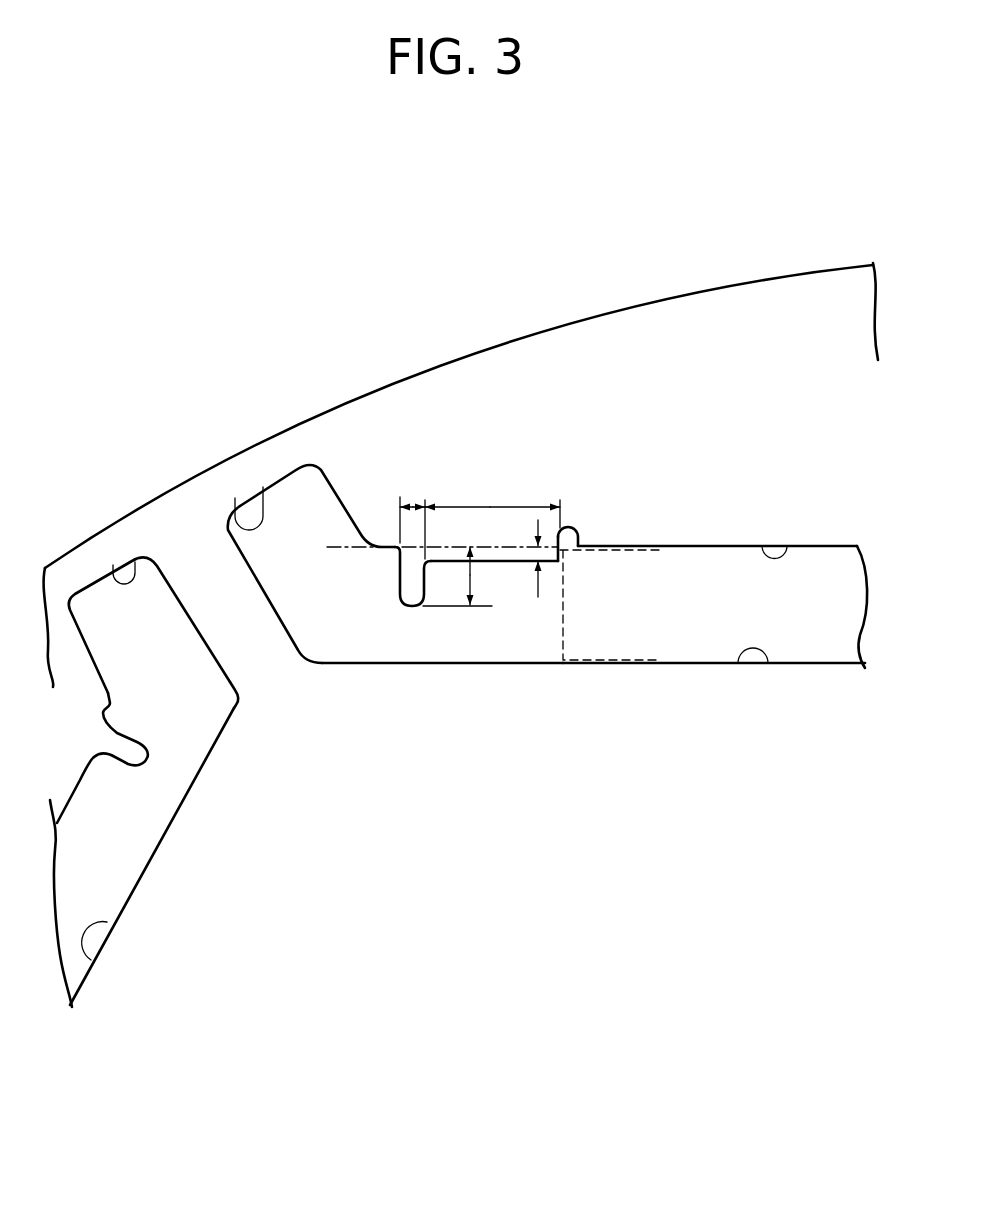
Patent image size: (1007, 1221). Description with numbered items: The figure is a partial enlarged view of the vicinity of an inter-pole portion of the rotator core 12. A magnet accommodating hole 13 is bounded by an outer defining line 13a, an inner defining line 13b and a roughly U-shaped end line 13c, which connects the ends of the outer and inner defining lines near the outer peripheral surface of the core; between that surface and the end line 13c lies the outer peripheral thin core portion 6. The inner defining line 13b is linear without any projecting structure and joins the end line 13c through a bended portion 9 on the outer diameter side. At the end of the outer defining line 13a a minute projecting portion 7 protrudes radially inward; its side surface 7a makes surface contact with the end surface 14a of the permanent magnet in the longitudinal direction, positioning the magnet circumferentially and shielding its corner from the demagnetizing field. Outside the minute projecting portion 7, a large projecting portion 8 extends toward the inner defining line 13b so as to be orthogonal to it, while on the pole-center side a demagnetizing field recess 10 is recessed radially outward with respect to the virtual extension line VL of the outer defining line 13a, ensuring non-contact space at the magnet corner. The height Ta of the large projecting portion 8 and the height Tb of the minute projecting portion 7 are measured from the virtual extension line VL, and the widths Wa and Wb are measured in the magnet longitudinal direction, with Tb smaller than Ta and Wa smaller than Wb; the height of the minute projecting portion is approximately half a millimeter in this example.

The rotator core 12 is at (148, 216).
The outer peripheral thin core portion 6 is at (273, 463).
The minute projecting portion 7 is at (510, 562).
The side surface of the minute projecting portion 7a is at (593, 550).
The large projecting portion 8 is at (412, 607).
The bended portion 9 is at (311, 657).
The demagnetizing field recess 10 is at (572, 528).
The magnet accommodating hole 13 is at (693, 567).
The outer defining line 13a is at (787, 545).
The inner defining line 13b is at (768, 663).
The end line 13c is at (135, 562).
The end surface of the permanent magnet 14a is at (553, 635).
The virtual extension line VL is at (345, 545).
The width of the large projecting portion Wa is at (415, 506).
The width of the minute projecting portion Wb is at (492, 514).
The height dimension of the large projecting portion Ta is at (462, 576).
The height dimension of the minute projecting portion Tb is at (539, 574).